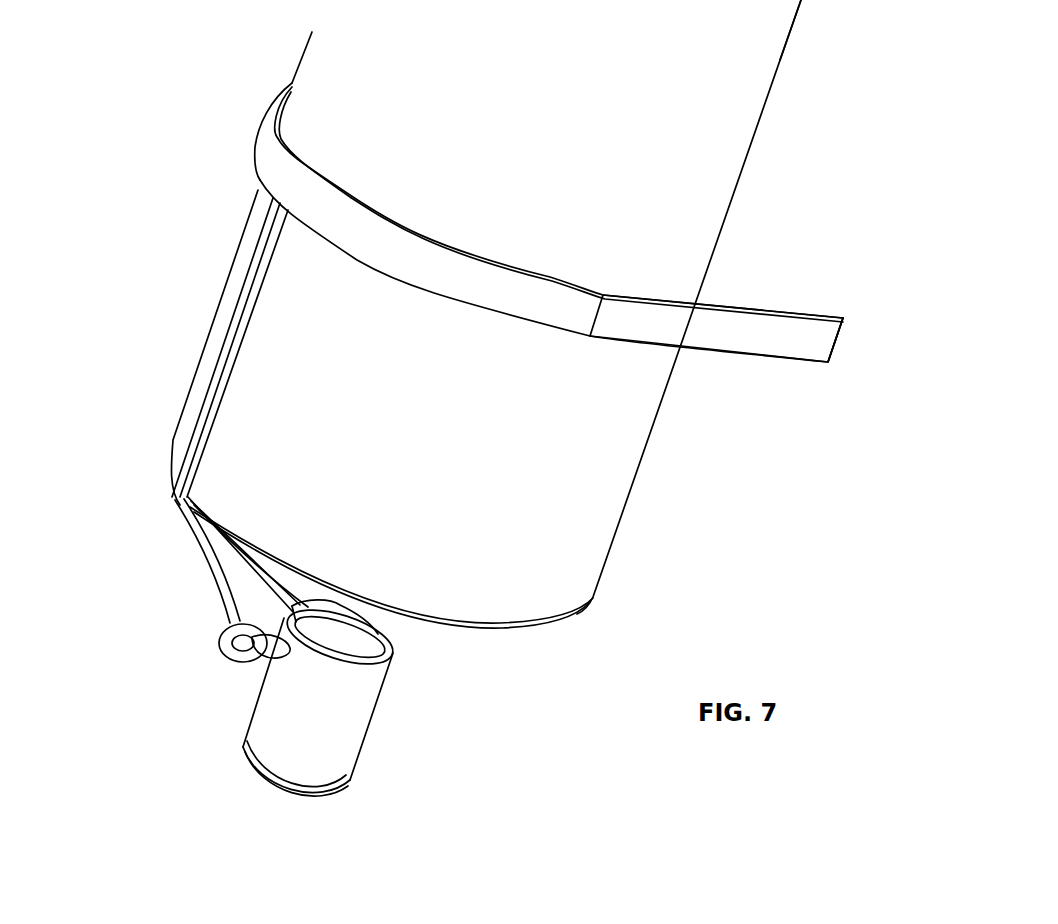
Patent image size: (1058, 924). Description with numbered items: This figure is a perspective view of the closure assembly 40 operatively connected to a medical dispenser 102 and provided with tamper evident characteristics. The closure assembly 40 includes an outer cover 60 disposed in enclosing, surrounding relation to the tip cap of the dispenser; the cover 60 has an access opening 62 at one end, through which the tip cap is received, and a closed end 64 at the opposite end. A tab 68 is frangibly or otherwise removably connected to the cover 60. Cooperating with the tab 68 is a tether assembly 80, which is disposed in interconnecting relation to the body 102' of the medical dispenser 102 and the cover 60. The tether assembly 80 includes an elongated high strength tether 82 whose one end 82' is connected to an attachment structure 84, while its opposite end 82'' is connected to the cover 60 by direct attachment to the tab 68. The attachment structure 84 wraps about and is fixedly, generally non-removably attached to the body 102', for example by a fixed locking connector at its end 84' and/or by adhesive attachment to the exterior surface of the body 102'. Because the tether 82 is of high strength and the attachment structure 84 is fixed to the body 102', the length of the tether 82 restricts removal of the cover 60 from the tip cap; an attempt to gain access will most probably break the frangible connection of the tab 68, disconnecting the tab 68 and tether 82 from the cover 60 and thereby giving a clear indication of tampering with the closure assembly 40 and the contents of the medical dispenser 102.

The medical dispenser 102 is at (421, 314).
The body of the medical dispenser 102' is at (829, 74).
The tether assembly 80 is at (453, 353).
The elongated high strength tether 82 is at (187, 405).
The end of tether 82' is at (480, 222).
The end of tether 82'' is at (152, 561).
The attachment structure 84 is at (716, 290).
The end of attachment structure 84' is at (821, 406).
The closure assembly 40 is at (364, 740).
The outer cover 60 is at (328, 753).
The access opening 62 is at (397, 650).
The closed end 64 is at (293, 792).
The tab 68 is at (263, 660).